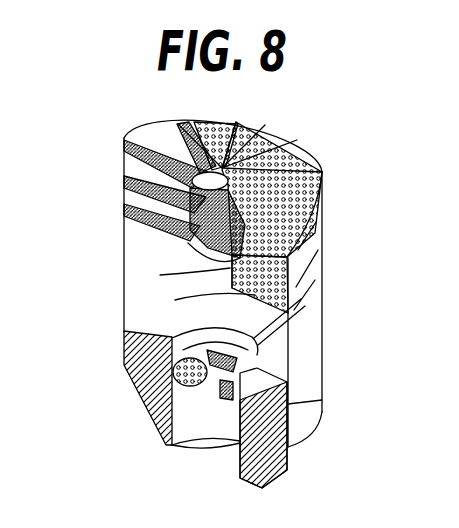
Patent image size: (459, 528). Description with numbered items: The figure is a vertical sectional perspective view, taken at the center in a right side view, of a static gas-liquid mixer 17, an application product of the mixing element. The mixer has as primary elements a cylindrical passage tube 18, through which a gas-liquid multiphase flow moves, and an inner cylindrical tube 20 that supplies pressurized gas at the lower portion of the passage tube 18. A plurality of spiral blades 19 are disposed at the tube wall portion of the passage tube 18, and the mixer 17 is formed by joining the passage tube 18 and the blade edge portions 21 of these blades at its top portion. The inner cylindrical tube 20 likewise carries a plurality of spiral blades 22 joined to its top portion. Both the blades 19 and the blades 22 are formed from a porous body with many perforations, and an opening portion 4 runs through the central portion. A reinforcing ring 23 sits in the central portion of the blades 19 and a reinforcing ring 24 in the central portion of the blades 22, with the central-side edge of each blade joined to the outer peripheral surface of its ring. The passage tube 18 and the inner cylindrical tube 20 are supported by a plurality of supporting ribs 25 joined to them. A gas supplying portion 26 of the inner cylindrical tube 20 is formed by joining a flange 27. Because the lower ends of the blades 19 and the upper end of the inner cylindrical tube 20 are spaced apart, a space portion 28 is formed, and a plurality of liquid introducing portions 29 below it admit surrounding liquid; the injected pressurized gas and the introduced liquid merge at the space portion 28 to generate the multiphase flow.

The opening portion 4 is at (172, 265).
The static gas-liquid mixer 17 is at (305, 131).
The passage tube 18 is at (318, 158).
The spiral blades 19 is at (316, 183).
The inner cylindrical tube 20 is at (300, 368).
The blade edge portions 21 is at (322, 243).
The spiral blades 22 is at (205, 393).
The reinforcing ring 23 is at (150, 187).
The reinforcing ring 24 is at (300, 403).
The supporting ribs 25 is at (300, 353).
The gas supplying portion 26 is at (210, 457).
The flange 27 is at (272, 484).
The space portion 28 is at (175, 300).
The liquid introducing portions 29 is at (300, 430).